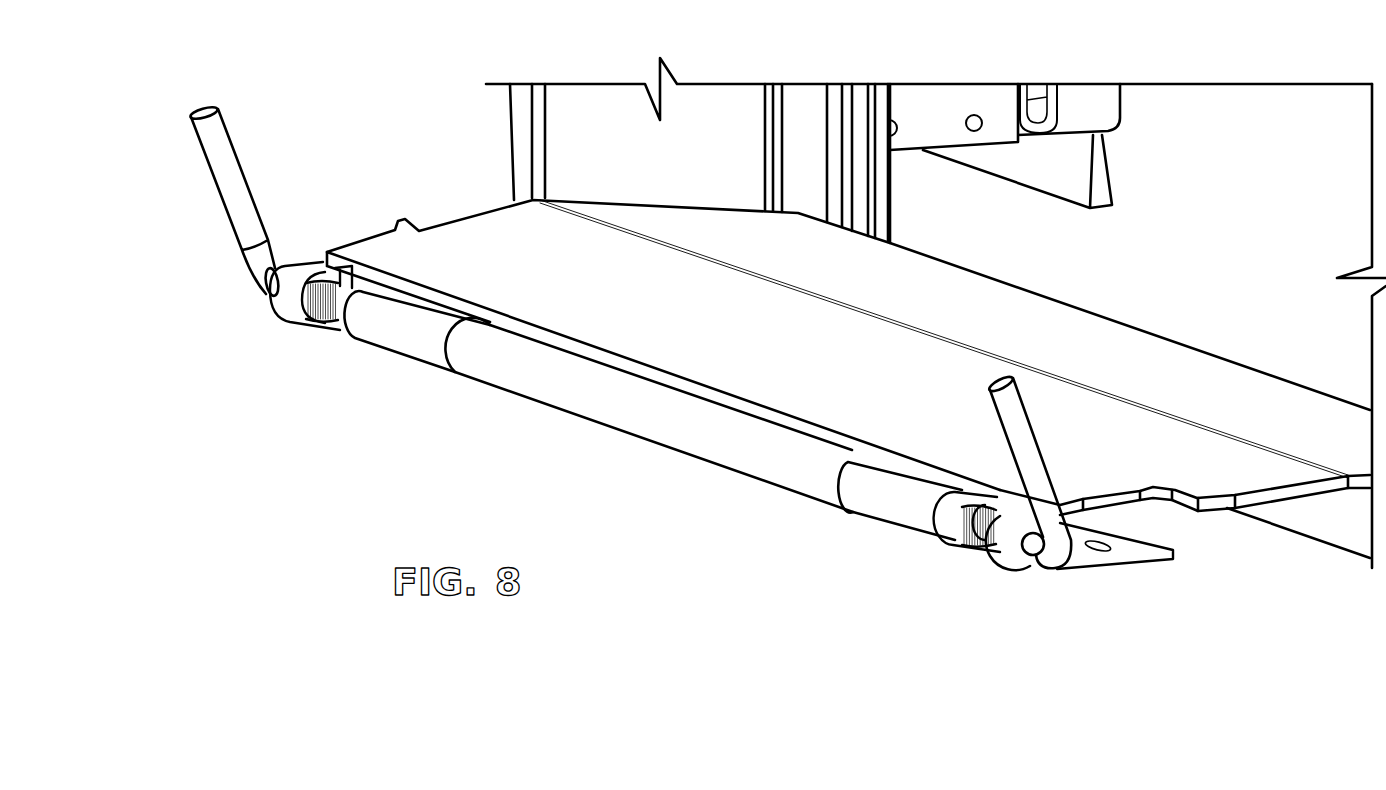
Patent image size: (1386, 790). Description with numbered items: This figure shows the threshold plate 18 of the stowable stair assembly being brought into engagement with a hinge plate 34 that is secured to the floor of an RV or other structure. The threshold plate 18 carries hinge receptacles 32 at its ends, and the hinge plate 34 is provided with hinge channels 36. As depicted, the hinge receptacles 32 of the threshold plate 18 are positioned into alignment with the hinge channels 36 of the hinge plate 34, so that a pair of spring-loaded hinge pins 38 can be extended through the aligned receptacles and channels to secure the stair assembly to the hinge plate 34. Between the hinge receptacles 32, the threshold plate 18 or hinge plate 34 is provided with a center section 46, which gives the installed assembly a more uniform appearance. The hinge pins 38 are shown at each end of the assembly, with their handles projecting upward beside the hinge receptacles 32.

The threshold plate 18 is at (945, 355).
The hinge receptacles 32 is at (337, 328).
The hinge plate 34 is at (1163, 569).
The hinge channels 36 is at (400, 337).
The spring-loaded hinge pins 38 is at (180, 213).
The center section 46 is at (613, 407).